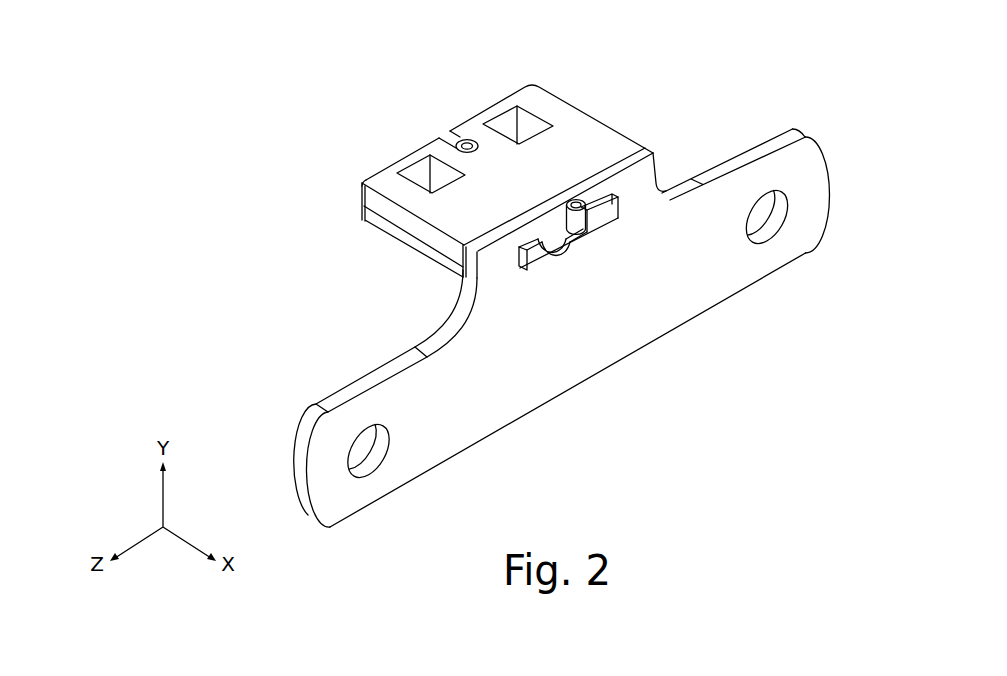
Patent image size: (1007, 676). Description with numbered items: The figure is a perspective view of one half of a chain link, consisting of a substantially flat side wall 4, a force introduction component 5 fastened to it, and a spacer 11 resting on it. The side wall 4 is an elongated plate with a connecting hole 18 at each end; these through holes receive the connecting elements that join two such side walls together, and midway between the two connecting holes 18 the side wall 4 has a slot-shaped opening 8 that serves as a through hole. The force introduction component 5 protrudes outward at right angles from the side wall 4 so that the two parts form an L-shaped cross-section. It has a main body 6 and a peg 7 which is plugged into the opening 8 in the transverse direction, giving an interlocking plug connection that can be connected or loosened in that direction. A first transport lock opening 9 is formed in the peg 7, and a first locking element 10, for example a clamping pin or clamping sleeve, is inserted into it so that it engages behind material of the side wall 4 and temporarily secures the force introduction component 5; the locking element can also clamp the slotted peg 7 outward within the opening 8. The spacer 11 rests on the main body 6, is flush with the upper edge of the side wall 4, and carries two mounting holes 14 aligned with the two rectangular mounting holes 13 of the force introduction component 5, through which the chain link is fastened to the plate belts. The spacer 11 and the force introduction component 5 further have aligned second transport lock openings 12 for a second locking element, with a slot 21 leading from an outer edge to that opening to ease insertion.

The side wall 4 is at (710, 252).
The force introduction component 5 is at (384, 228).
The main body 6 is at (452, 220).
The peg 7 is at (602, 231).
The opening 8 is at (550, 268).
The first transport lock opening 9 is at (593, 255).
The first locking element 10 is at (577, 203).
The spacer 11 is at (377, 200).
The second transport lock opening 12 is at (471, 135).
The mounting hole 13 is at (423, 182).
The mounting hole 14 is at (425, 157).
The connecting hole 18 is at (370, 470).
The slot 21 is at (442, 127).